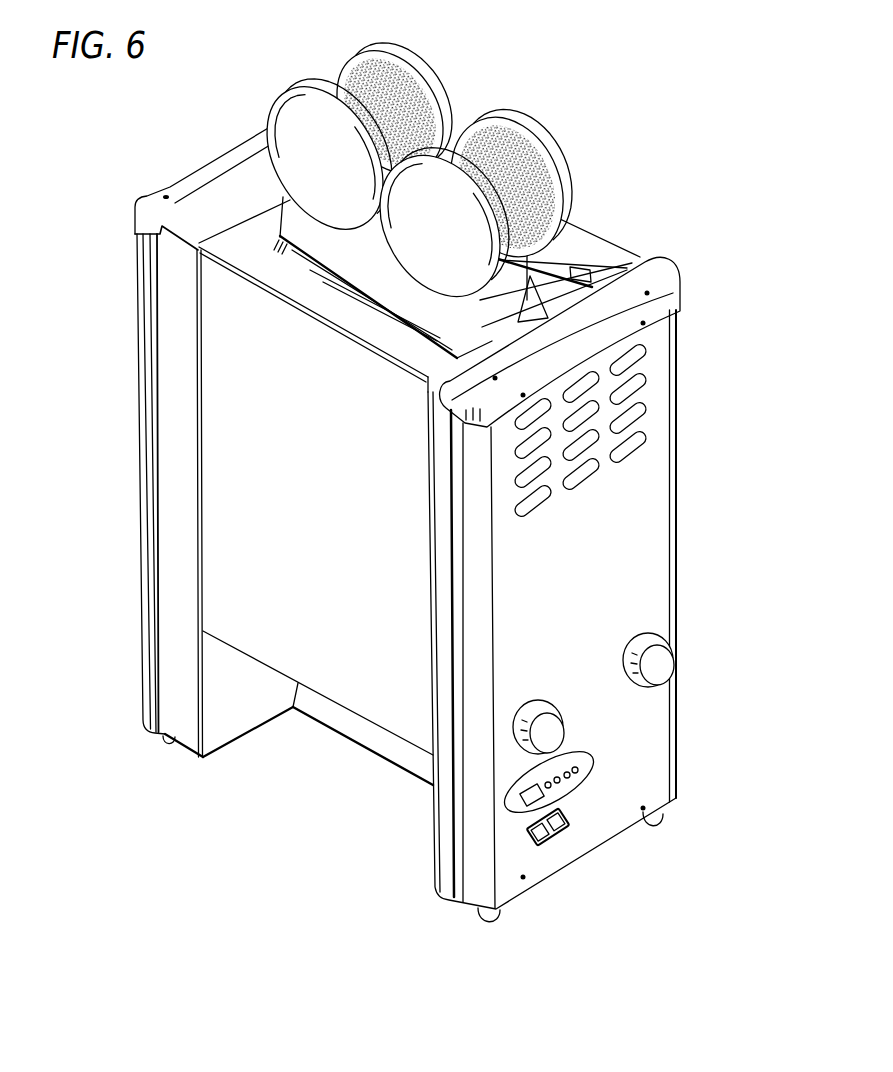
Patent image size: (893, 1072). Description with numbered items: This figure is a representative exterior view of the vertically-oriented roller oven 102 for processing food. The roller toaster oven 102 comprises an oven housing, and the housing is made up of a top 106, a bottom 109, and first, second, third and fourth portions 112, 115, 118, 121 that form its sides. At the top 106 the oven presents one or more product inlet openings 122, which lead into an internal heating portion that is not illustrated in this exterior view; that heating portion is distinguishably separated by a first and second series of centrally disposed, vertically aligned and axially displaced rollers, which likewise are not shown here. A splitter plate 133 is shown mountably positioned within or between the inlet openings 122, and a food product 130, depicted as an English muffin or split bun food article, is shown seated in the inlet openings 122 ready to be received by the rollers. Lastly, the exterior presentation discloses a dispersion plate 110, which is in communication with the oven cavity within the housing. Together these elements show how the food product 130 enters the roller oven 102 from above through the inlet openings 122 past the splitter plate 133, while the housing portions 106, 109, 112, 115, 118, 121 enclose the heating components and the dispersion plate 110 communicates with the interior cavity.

The vertically-oriented roller oven 102 is at (617, 174).
The top 106 is at (570, 240).
The bottom 109 is at (226, 720).
The dispersion plate 110 is at (360, 732).
The first portion 112 is at (675, 425).
The second portion 115 is at (283, 478).
The third portion 118 is at (633, 558).
The fourth portion 121 is at (140, 323).
The product inlet openings 122 is at (267, 230).
The food product 130 is at (290, 123).
The splitter plate 133 is at (383, 269).